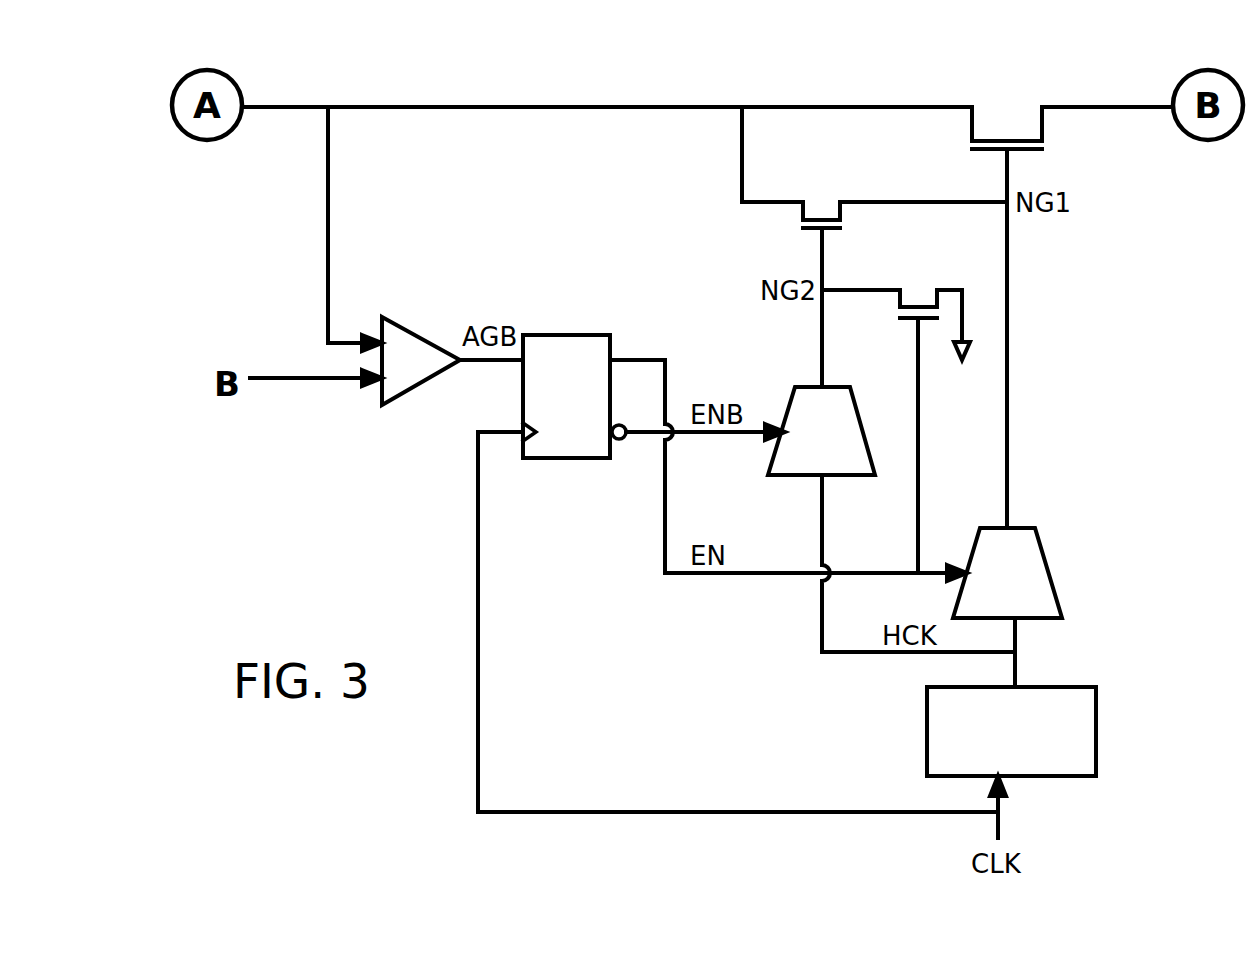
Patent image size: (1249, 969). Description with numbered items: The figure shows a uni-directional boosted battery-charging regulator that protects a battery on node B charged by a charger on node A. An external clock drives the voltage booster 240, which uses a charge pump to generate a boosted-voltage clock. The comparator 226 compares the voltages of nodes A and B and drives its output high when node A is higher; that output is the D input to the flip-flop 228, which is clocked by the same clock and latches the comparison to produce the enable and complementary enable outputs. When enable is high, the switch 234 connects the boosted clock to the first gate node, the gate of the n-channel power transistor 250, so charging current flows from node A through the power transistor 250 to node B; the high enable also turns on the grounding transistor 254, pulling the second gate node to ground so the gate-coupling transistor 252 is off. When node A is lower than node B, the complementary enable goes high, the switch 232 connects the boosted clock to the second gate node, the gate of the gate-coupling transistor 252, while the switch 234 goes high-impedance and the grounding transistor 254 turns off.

The comparator 226 is at (402, 332).
The flip-flop 228 is at (578, 336).
The switch 232 is at (805, 467).
The switch 234 is at (991, 606).
The voltage booster 240 is at (1080, 765).
The power transistor 250 is at (1000, 134).
The gate-coupling transistor 252 is at (830, 212).
The grounding transistor 254 is at (928, 302).